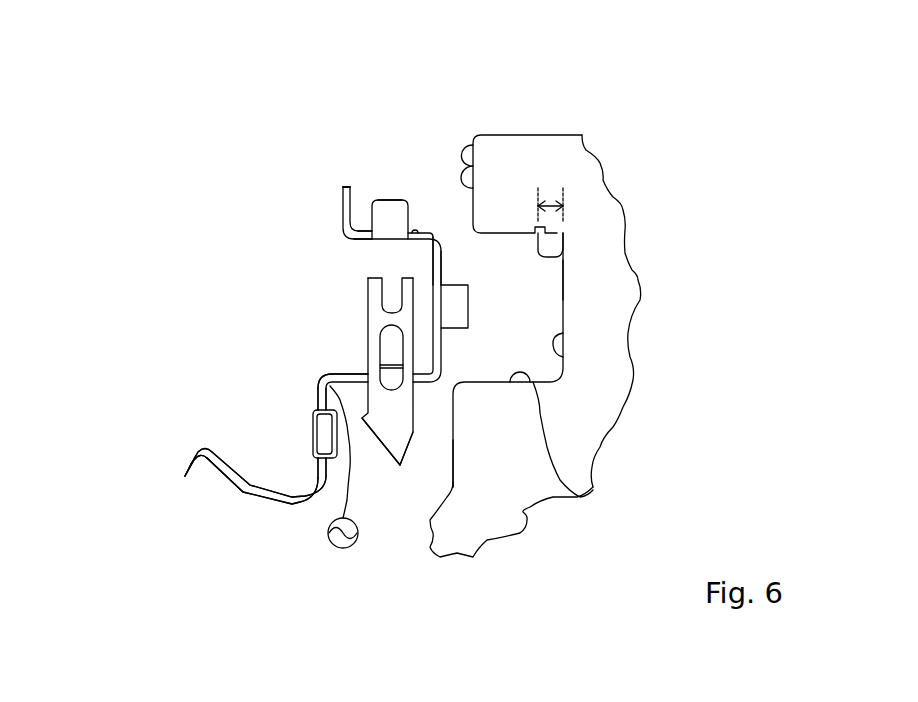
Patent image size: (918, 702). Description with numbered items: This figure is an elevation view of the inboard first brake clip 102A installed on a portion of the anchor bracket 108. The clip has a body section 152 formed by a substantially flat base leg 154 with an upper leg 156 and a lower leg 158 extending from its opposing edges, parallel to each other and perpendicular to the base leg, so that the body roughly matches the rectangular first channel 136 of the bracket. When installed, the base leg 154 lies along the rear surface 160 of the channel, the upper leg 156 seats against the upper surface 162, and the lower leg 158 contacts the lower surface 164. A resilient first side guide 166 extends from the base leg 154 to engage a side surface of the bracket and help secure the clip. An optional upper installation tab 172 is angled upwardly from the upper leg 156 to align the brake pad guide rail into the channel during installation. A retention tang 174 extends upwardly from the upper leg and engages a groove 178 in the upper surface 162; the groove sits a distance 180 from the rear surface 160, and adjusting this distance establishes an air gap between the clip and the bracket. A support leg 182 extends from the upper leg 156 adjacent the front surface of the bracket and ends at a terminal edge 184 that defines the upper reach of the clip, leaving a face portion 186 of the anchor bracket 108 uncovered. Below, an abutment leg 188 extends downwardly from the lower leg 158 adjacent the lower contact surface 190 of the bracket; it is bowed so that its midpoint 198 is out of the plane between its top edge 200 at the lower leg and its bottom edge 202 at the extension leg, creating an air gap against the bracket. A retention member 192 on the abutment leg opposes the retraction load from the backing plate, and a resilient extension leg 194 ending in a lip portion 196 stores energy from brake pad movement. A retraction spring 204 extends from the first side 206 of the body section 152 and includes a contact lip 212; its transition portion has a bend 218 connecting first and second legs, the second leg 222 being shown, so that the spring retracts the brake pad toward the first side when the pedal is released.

The inboard first brake clip 102A is at (296, 190).
The anchor bracket 108 is at (585, 173).
The first channel 136 is at (567, 277).
The body section 152 is at (240, 431).
The base leg 154 is at (443, 273).
The upper leg 156 is at (392, 213).
The lower leg 158 is at (340, 380).
The rear surface 160 is at (567, 353).
The upper surface 162 is at (507, 240).
The lower surface 164 is at (577, 495).
The first side guide 166 is at (457, 310).
The upper installation tab 172 is at (398, 200).
The retention tang 174 is at (415, 227).
The groove 178 is at (560, 257).
The distance 180 is at (548, 190).
The support leg 182 is at (340, 190).
The terminal edge 184 is at (350, 183).
The face portion 186 is at (462, 165).
The abutment leg 188 is at (320, 412).
The lower contact surface 190 is at (450, 470).
The retention member 192 is at (317, 433).
The extension leg 194 is at (262, 481).
The lip portion 196 is at (212, 452).
The midpoint 198 is at (316, 437).
The top edge 200 is at (320, 398).
The bottom edge 202 is at (317, 493).
The retraction spring 204 is at (304, 308).
The first side 206 is at (356, 370).
The contact lip 212 is at (393, 350).
The bend 218 is at (383, 445).
The second leg 222 is at (398, 425).